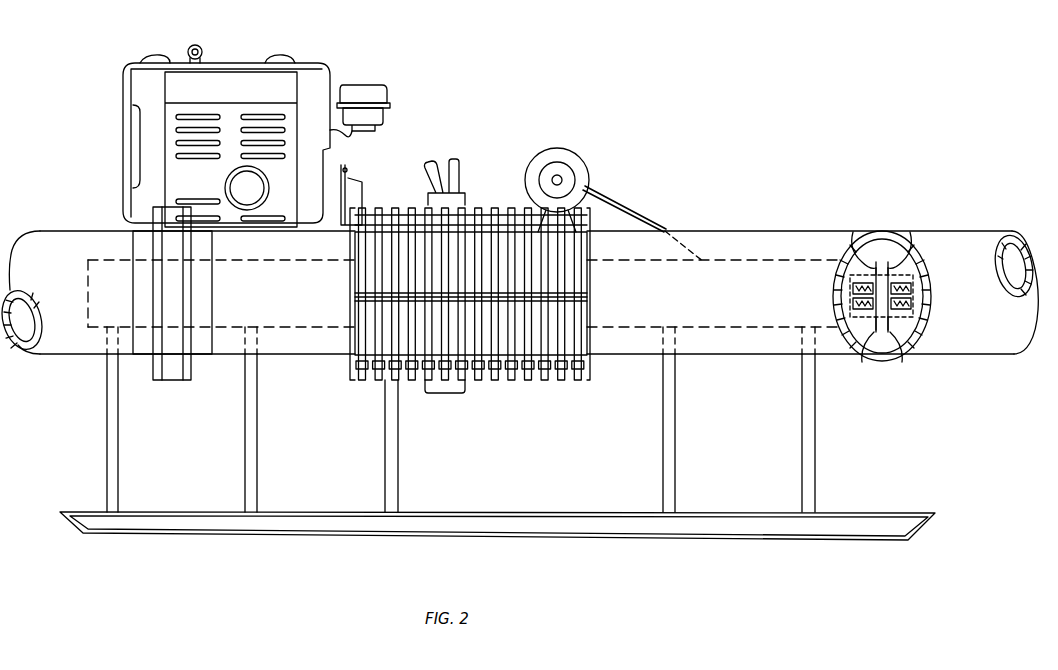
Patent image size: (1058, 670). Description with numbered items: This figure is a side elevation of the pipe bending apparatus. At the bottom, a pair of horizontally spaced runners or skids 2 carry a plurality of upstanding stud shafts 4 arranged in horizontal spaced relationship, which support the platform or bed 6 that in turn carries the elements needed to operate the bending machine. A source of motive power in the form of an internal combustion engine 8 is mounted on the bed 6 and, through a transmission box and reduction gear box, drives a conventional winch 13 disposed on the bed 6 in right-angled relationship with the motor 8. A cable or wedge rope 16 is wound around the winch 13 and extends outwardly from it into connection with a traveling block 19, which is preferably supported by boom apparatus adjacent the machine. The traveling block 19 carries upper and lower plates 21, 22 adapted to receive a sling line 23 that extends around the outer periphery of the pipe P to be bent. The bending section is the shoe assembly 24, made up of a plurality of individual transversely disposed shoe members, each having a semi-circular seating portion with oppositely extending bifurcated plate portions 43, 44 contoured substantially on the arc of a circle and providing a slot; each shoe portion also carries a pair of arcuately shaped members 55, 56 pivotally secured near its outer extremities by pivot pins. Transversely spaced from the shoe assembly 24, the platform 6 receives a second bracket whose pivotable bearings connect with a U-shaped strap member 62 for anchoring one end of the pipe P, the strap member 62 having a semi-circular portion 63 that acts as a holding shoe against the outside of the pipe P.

The runners or skids 2 is at (136, 535).
The stud shafts 4 is at (396, 483).
The platform or bed 6 is at (88, 268).
The internal combustion engine 8 is at (228, 63).
The winch 13 is at (576, 161).
The cable or wedge rope 16 is at (620, 192).
The traveling block 19 is at (850, 306).
The upper plate 21 is at (852, 279).
The lower plate 22 is at (918, 312).
The sling line 23 is at (918, 236).
The shoe assembly 24 is at (351, 364).
The bifurcated plate portion 43 is at (352, 242).
The bifurcated plate portion 44 is at (590, 257).
The arcuately shaped member 55 is at (590, 292).
The arcuately shaped member 56 is at (588, 325).
The U-shaped strap member 62 is at (159, 381).
The semi-circular portion 63 is at (205, 306).
The pipe P is at (803, 232).